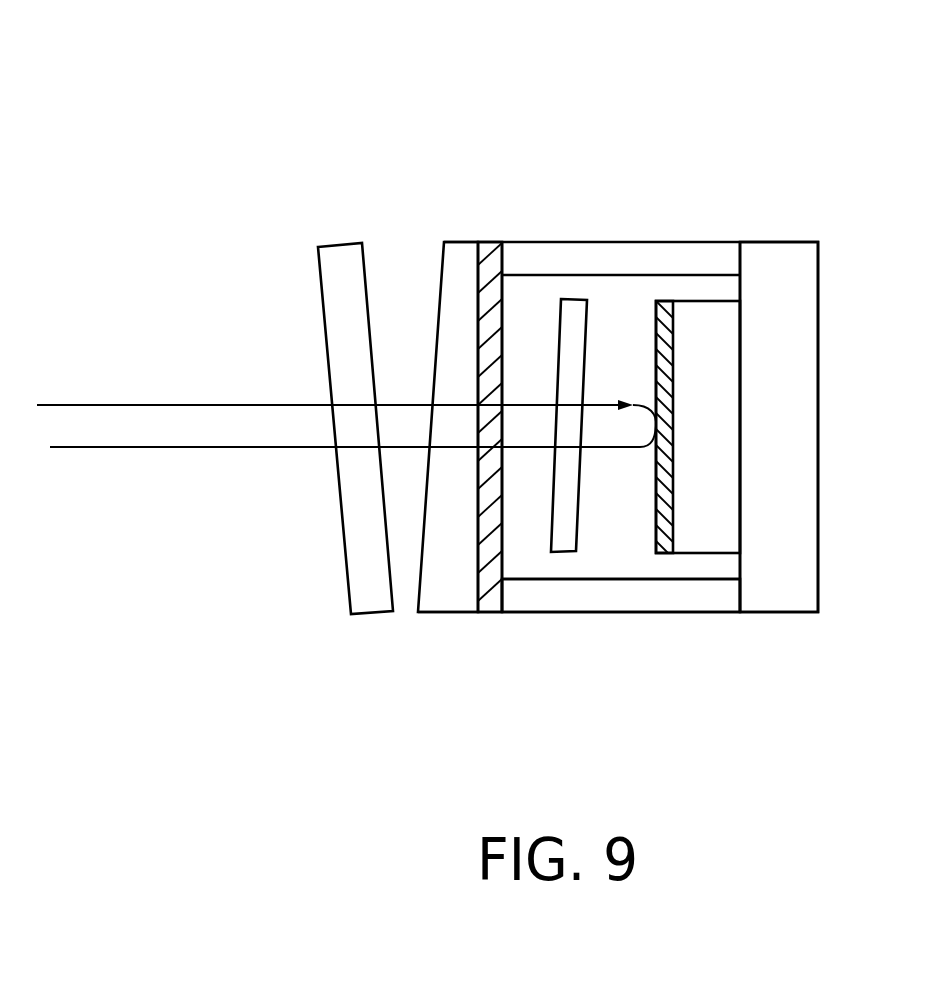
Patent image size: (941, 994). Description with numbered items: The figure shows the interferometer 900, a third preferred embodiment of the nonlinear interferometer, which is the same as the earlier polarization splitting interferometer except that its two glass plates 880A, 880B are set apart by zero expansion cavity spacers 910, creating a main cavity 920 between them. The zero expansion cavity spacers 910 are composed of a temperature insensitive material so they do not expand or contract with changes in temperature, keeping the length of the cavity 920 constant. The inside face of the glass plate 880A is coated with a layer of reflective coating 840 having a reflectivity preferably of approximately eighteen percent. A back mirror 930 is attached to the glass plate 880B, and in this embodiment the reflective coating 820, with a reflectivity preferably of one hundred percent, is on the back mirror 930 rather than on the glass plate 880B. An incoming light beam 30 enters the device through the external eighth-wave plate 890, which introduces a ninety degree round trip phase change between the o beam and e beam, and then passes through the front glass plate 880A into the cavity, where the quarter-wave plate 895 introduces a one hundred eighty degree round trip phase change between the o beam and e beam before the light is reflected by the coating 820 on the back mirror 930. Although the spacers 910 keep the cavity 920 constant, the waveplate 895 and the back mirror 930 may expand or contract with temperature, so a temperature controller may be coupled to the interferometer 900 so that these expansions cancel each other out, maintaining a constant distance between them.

The interferometer 900 is at (598, 63).
The reflective coating 840 is at (492, 232).
The reflective coating 820 is at (666, 290).
The back mirror 930 is at (715, 314).
The glass plate 880A is at (456, 242).
The glass plate 880B is at (818, 301).
The input light beam 30 is at (138, 405).
The main cavity 920 is at (713, 567).
The λ/8 plate 890 is at (373, 622).
The λ/4 plate 895 is at (563, 562).
The zero expansion cavity spacers 910 is at (707, 622).